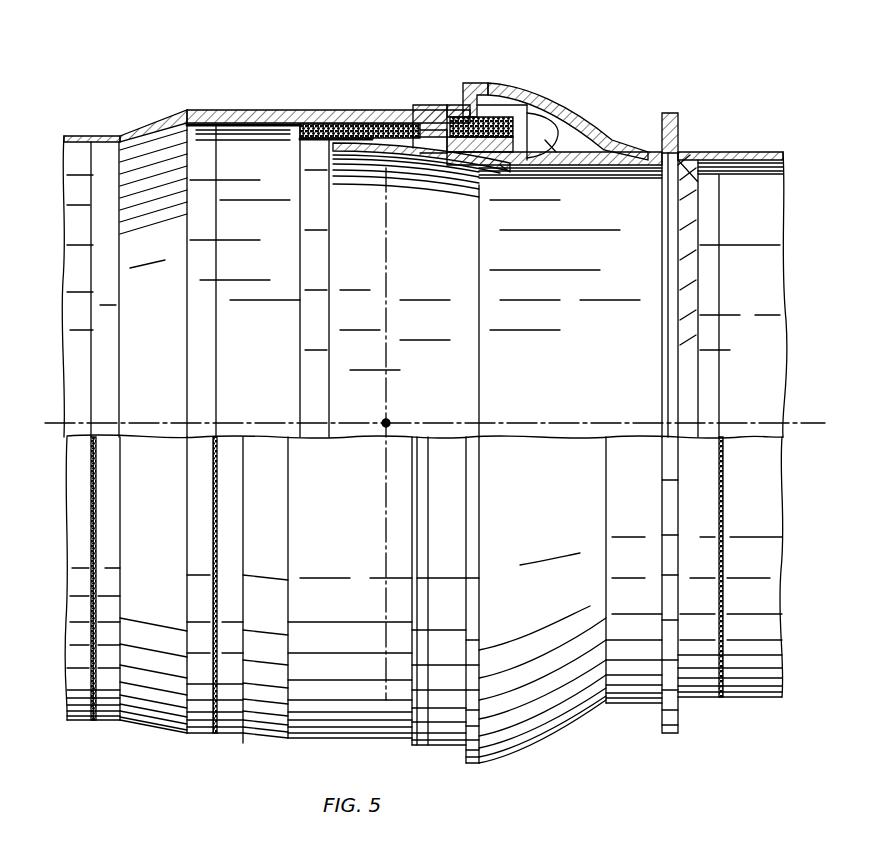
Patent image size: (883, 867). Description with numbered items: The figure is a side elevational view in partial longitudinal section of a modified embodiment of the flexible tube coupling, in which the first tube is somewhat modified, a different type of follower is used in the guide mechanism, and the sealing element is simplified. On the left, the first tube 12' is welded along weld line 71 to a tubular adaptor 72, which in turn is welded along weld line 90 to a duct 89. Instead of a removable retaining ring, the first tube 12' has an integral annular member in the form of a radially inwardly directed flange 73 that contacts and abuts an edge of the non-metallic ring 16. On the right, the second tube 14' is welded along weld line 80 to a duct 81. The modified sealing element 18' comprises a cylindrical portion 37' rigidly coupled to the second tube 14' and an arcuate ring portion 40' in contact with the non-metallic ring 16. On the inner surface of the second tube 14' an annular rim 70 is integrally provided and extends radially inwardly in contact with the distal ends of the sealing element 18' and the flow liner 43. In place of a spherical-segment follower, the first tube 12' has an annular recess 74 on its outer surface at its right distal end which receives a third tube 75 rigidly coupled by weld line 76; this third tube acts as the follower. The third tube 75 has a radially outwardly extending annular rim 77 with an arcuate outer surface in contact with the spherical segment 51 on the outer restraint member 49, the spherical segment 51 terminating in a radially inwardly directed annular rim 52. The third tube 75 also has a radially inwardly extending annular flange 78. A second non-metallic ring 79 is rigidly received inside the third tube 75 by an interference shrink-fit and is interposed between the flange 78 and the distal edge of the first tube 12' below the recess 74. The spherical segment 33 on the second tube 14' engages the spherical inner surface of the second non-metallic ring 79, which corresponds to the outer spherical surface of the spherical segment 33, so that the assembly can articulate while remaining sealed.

The duct 89 is at (90, 133).
The tubular adaptor 72 is at (140, 126).
The weld line 71 is at (214, 117).
The first tube 12' is at (328, 91).
The non-metallic ring 16 is at (333, 146).
The annular recess 74 is at (432, 112).
The weld line 76 is at (444, 103).
The third tube 75 is at (441, 113).
The annular rim 52 is at (466, 115).
The spherical segment 51 is at (492, 83).
The annular rim 77 is at (528, 108).
The annular flange 78 is at (552, 150).
The outer restraint member 49 is at (580, 108).
The flange 73 is at (427, 150).
The arcuate ring portion 40' is at (421, 183).
The spherical segment 33 is at (476, 155).
The sealing element 18' is at (406, 294).
The second non-metallic ring 79 is at (508, 160).
The cylindrical portion 37' is at (554, 241).
The flow liner 43 is at (603, 182).
The annular rim 70 is at (690, 163).
The second tube 14' is at (730, 262).
The duct 81 is at (758, 151).
The weld line 90 is at (91, 525).
The weld line 80 is at (722, 552).